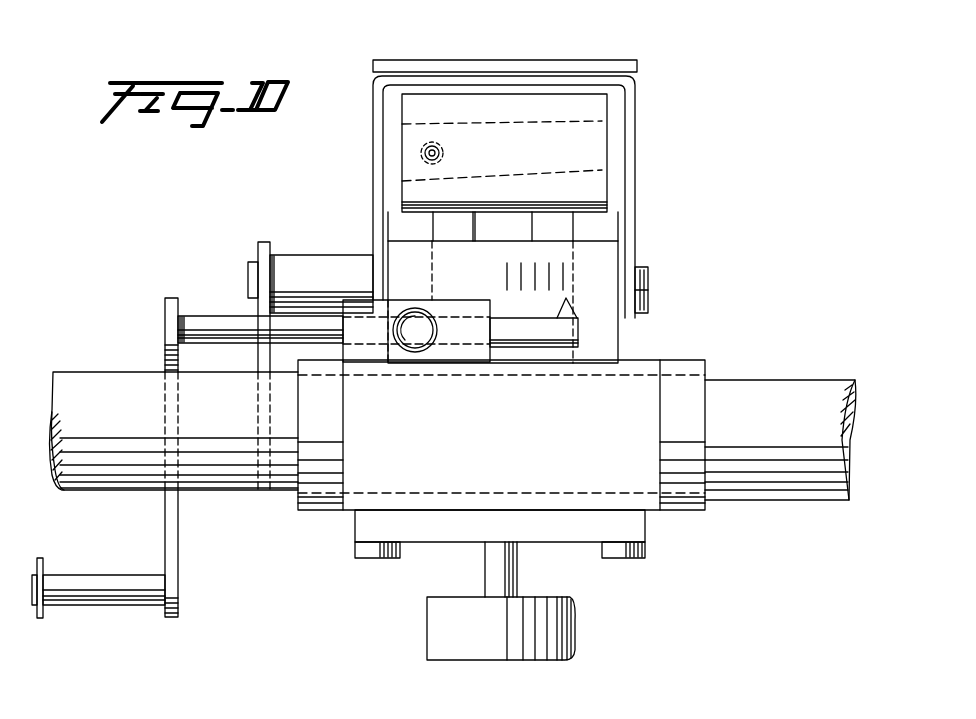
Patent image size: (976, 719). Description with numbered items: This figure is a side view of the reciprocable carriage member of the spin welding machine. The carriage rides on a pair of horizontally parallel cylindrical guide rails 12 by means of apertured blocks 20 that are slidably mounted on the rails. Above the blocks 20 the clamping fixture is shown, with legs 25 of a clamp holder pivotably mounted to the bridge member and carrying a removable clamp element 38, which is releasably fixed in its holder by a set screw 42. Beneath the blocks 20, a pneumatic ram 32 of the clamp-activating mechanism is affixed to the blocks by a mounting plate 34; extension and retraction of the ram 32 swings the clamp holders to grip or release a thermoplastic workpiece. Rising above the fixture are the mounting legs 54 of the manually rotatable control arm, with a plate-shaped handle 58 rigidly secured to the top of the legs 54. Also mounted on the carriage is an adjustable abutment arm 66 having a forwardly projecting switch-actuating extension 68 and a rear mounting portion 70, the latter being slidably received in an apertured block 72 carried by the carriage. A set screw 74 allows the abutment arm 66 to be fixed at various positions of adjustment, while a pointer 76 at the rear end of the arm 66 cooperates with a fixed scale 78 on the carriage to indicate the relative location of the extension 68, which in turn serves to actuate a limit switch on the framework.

The cylindrical guide rails 12 is at (130, 374).
The apertured blocks 20 is at (628, 485).
The legs 25 is at (573, 230).
The pneumatic ram 32 is at (432, 631).
The mounting plate 34 is at (558, 535).
The clamp element 38 is at (600, 188).
The set screws 42 is at (428, 143).
The mounting legs 54 is at (632, 132).
The handle 58 is at (585, 65).
The abutment arm 66 is at (180, 528).
The switch-actuating extension 68 is at (101, 596).
The rear mounting portion 70 is at (223, 318).
The apertured block 72 is at (390, 303).
The set screw 74 is at (416, 352).
The pointer 76 is at (580, 305).
The fixed scale 78 is at (573, 280).